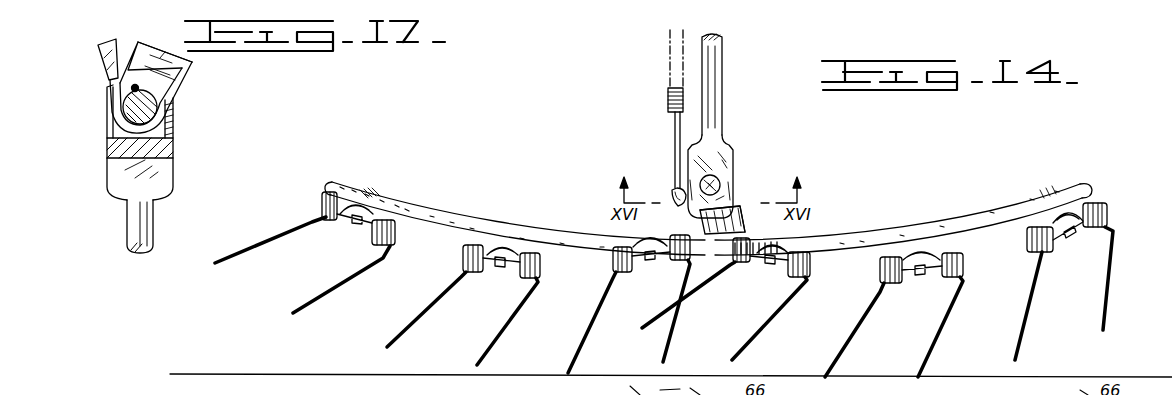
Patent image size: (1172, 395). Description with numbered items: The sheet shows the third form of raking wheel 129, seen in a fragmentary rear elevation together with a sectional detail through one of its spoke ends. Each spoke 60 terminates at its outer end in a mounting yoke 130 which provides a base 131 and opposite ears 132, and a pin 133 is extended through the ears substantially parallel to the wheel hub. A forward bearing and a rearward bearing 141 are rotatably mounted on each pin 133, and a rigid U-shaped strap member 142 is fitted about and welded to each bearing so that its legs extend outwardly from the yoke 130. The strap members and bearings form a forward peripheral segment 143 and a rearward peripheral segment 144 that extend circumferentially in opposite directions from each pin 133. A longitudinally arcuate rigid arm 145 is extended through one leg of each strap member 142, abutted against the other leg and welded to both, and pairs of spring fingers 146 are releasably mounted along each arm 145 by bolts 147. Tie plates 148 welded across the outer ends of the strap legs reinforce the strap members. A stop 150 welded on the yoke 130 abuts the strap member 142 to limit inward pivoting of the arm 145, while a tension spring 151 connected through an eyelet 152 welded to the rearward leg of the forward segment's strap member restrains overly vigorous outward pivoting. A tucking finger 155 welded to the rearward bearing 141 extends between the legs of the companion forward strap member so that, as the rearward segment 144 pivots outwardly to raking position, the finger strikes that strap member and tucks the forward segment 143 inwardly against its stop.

In FIG. 17, the spoke 60 is at (147, 226).
In FIG. 14, the spoke 60 is at (715, 93).
In FIG. 14, the raking wheel 129 is at (739, 145).
In FIG. 14, the mounting yoke 130 is at (693, 155).
In FIG. 17, the base 131 is at (167, 147).
In FIG. 14, the ear 132 is at (722, 193).
In FIG. 17, the pin 133 is at (160, 116).
In FIG. 14, the pin 133 is at (716, 180).
In FIG. 17, the rearward bearing 141 is at (170, 102).
In FIG. 17, the U-shaped strap member 142 is at (190, 70).
In FIG. 14, the forward peripheral segment 143 is at (850, 233).
In FIG. 17, the rearward peripheral segment 144 is at (104, 37).
In FIG. 14, the rearward peripheral segment 144 is at (460, 220).
In FIG. 14, the arcuate rigid arm 145 is at (457, 238).
In FIG. 14, the spring finger 146 is at (367, 262).
In FIG. 14, the bolt 147 is at (502, 267).
In FIG. 17, the tie plate 148 is at (157, 25).
In FIG. 14, the tie plate 148 is at (685, 243).
In FIG. 17, the stop 150 is at (107, 98).
In FIG. 14, the tension spring 151 is at (668, 105).
In FIG. 14, the eyelet 152 is at (673, 190).
In FIG. 17, the tucking finger 155 is at (110, 80).